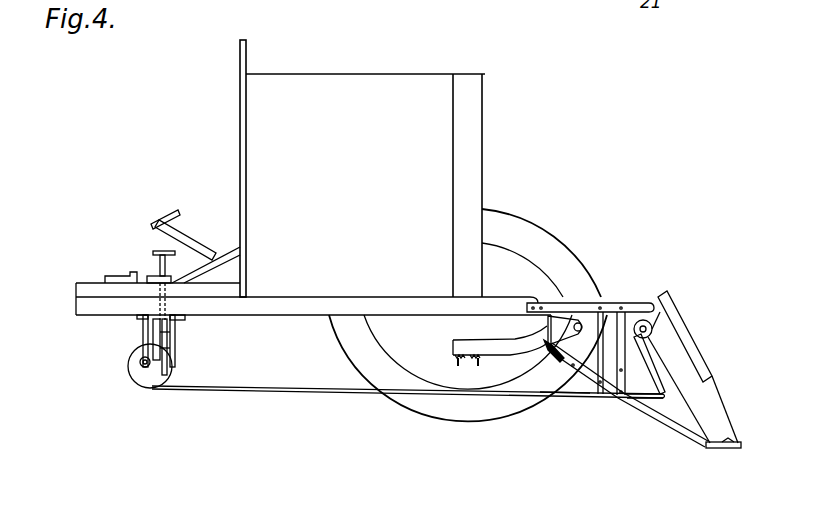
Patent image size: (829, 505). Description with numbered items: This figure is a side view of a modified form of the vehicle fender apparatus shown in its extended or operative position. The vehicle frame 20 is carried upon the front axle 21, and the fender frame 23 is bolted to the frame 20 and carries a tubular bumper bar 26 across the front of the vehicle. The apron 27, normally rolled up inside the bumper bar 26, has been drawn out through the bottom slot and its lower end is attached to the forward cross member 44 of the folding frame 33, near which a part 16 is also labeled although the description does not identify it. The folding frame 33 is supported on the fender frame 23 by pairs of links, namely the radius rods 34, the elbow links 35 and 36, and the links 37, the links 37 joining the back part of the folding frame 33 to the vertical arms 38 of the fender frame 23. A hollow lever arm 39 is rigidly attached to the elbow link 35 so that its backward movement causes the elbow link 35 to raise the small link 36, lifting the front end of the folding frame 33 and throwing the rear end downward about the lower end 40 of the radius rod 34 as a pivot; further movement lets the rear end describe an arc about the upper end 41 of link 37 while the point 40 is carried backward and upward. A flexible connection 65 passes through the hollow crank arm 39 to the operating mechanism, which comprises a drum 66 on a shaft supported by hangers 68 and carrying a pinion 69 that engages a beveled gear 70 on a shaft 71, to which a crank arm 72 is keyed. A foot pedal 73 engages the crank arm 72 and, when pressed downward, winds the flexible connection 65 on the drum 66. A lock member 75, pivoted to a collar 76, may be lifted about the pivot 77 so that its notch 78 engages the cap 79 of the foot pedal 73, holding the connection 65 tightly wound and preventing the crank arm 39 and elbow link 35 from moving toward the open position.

The foot plate 16 is at (732, 448).
The vehicle frame 20 is at (500, 308).
The front axle 21 is at (546, 345).
The fender frame 23 is at (572, 308).
The bumper bar 26 is at (678, 308).
The apron 27 is at (705, 411).
The folding frame 33 is at (660, 417).
The radius rod 34 is at (618, 308).
The elbow link 35 is at (650, 320).
The small link 36 is at (630, 390).
The link 37 is at (563, 362).
The vertical arm 38 is at (597, 307).
The hollow lever arm 39 is at (643, 358).
The lower end of radius rod 40 is at (563, 397).
The upper end of link 41 is at (462, 365).
The forward cross member 44 is at (717, 448).
The flexible connection 65 is at (295, 389).
The drum 66 is at (145, 382).
The hanger 68 is at (143, 332).
The pinion 69 is at (142, 363).
The beveled gear 70 is at (158, 383).
The shaft 71 is at (168, 368).
The crank arm 72 is at (162, 345).
The foot pedal 73 is at (177, 328).
The lock member 75 is at (117, 277).
The collar 76 is at (192, 272).
The pivot 77 is at (148, 275).
The notch 78 is at (137, 284).
The cap 79 is at (165, 250).